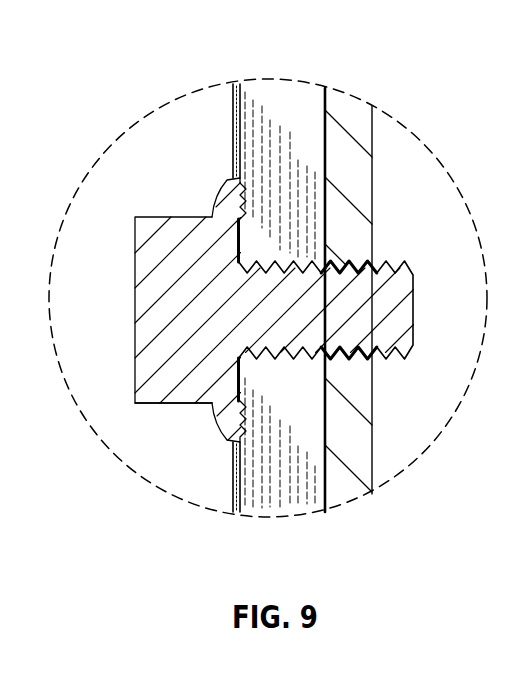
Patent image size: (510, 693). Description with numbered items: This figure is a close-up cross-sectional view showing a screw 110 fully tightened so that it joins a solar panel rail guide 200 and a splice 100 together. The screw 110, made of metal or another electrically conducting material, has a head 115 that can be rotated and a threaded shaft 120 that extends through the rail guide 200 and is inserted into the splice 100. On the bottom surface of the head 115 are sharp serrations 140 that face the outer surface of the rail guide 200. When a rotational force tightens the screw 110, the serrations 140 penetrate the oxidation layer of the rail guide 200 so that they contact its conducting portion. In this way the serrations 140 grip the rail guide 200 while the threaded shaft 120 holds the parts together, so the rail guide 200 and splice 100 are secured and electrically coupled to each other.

The splice 100 is at (348, 106).
The screw 110 is at (146, 207).
The head 115 is at (174, 398).
The threaded shaft 120 is at (382, 268).
The serrations 140 is at (242, 192).
The first solar panel rail guide 200 is at (276, 90).